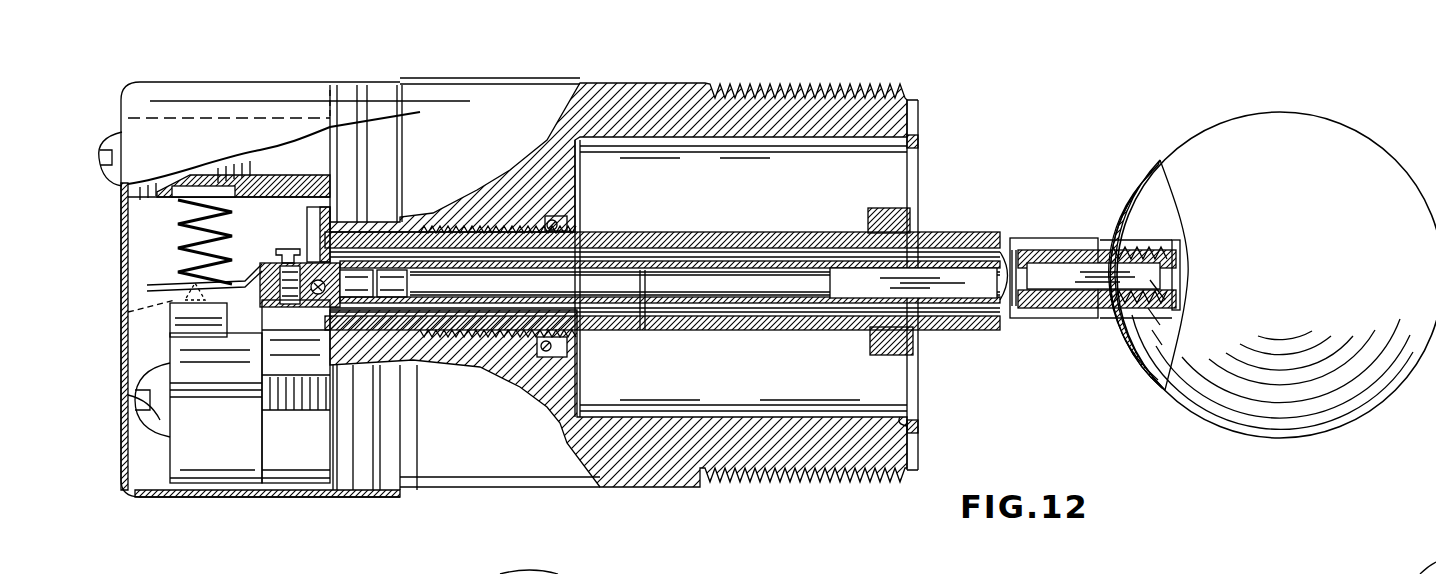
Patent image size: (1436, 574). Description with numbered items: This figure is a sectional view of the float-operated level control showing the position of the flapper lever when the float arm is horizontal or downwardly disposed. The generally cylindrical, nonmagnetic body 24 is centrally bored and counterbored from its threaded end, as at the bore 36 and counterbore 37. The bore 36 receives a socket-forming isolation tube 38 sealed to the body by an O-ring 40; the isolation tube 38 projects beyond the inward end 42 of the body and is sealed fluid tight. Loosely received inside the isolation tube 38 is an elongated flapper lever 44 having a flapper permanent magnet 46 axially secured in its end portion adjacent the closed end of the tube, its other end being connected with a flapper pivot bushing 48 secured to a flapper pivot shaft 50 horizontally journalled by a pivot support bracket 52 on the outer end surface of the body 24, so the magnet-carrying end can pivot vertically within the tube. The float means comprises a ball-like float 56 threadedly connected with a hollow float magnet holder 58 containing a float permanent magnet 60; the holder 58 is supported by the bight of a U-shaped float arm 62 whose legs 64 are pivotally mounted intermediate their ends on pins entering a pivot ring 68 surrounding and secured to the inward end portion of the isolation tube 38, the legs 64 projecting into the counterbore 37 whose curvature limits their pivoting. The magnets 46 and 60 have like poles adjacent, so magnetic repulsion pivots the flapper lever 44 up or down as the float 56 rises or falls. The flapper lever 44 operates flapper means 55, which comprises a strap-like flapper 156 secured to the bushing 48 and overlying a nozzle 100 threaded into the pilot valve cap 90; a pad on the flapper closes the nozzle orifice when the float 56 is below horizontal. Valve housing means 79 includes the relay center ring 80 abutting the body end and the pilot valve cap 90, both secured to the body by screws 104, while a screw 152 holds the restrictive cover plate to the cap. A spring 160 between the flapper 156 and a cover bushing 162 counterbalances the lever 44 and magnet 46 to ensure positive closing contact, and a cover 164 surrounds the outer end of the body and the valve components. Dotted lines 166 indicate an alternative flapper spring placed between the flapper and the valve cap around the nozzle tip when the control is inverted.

The body 24 is at (480, 82).
The bore 36 is at (662, 280).
The counterbore 37 is at (919, 420).
The isolation tube 38 is at (610, 232).
The O-ring 40 is at (566, 216).
The inward end 42 is at (919, 125).
The flapper lever 44 is at (637, 318).
The flapper permanent magnet 46 is at (945, 292).
The flapper pivot bushing 48 is at (395, 312).
The flapper pivot shaft 50 is at (340, 312).
The pivot support bracket 52 is at (305, 213).
The flapper means 55 is at (250, 258).
The float 56 is at (1262, 220).
The float magnet holder 58 is at (1080, 250).
The float permanent magnet 60 is at (1055, 300).
The float arm 62 is at (1040, 238).
The legs 64 is at (740, 332).
The pivot ring 68 is at (893, 207).
The valve housing means 79 is at (158, 461).
The relay center ring 80 is at (285, 483).
The pilot valve cap 90 is at (205, 483).
The nozzle 100 is at (200, 328).
The screws 104 is at (135, 422).
The screw 152 is at (128, 377).
The flapper 156 is at (158, 283).
The spring 160 is at (180, 236).
The cover bushing 162 is at (274, 145).
The cover 164 is at (214, 82).
The flapper spring (dotted) 166 is at (128, 318).